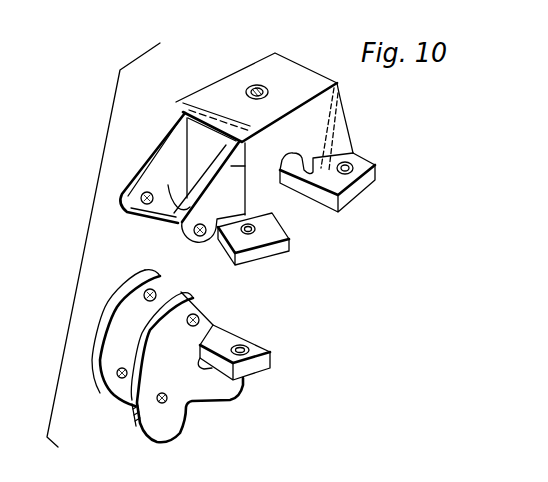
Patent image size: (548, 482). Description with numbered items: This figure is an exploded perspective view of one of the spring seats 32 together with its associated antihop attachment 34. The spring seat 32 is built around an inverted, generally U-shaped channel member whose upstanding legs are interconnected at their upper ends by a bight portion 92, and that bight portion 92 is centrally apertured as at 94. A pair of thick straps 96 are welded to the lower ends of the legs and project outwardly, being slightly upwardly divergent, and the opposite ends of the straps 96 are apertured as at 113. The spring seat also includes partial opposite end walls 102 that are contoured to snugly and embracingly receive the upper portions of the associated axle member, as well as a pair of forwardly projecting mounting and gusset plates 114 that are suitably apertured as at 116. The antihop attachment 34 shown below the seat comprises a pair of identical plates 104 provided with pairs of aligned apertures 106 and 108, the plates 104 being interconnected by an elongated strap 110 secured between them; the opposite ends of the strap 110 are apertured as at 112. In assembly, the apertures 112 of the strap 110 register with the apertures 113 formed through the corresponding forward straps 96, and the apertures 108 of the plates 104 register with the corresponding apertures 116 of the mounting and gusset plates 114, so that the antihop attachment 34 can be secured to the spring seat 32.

The spring seat 32 is at (400, 100).
The antihop attachment 34 is at (218, 404).
The bight portion 92 is at (206, 99).
The central aperture 94 is at (249, 87).
The thick straps 96 is at (370, 175).
The partial opposite end walls 102 is at (287, 130).
The plates 104 is at (145, 425).
The apertures 106 is at (157, 398).
The apertures 108 is at (194, 315).
The elongated strap 110 is at (264, 366).
The apertures 112 is at (240, 346).
The apertures 113 is at (257, 236).
The mounting and gusset plates 114 is at (182, 245).
The apertures 116 is at (153, 194).